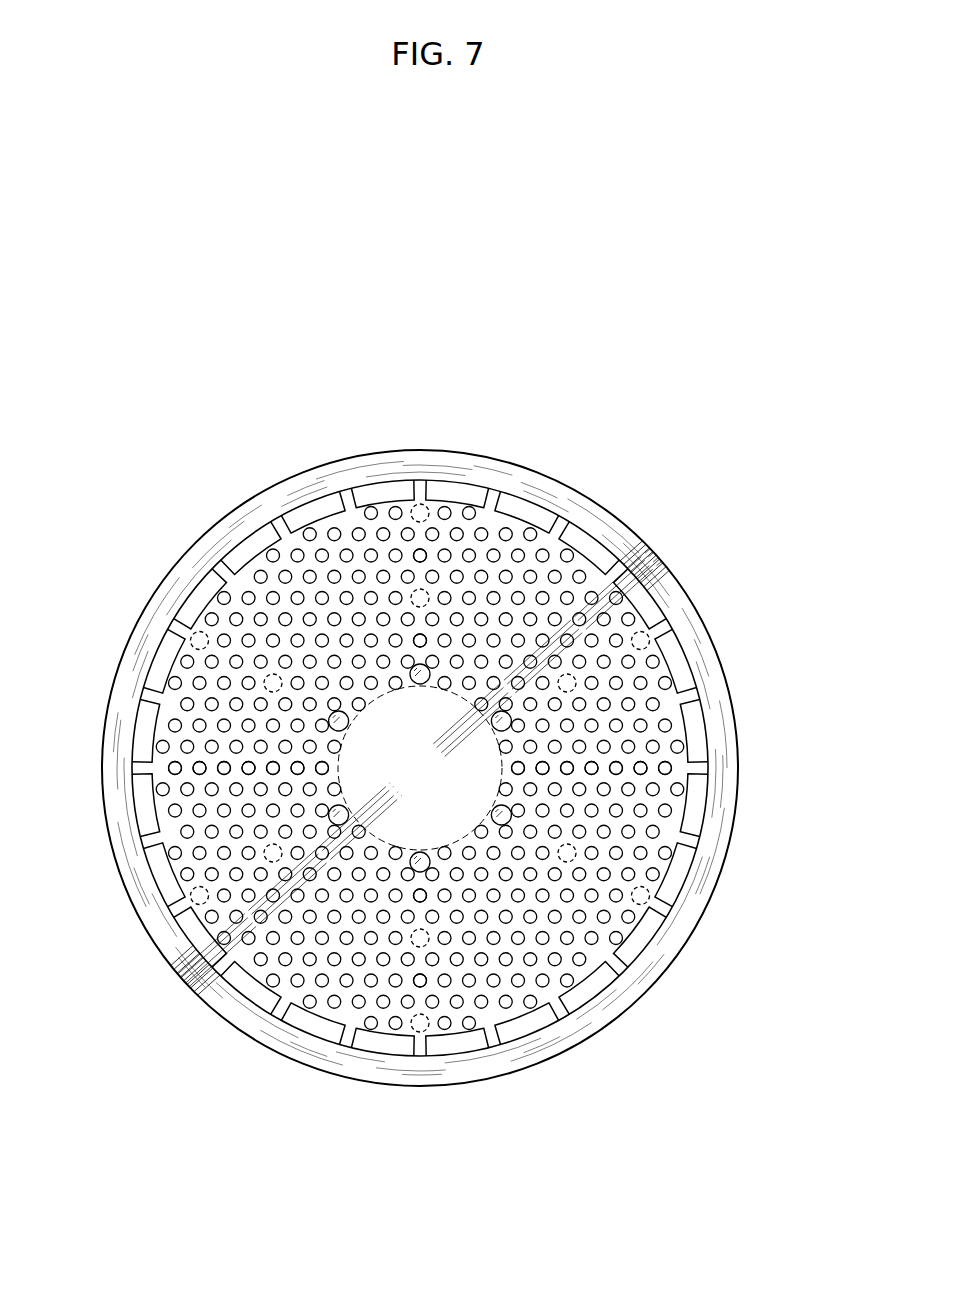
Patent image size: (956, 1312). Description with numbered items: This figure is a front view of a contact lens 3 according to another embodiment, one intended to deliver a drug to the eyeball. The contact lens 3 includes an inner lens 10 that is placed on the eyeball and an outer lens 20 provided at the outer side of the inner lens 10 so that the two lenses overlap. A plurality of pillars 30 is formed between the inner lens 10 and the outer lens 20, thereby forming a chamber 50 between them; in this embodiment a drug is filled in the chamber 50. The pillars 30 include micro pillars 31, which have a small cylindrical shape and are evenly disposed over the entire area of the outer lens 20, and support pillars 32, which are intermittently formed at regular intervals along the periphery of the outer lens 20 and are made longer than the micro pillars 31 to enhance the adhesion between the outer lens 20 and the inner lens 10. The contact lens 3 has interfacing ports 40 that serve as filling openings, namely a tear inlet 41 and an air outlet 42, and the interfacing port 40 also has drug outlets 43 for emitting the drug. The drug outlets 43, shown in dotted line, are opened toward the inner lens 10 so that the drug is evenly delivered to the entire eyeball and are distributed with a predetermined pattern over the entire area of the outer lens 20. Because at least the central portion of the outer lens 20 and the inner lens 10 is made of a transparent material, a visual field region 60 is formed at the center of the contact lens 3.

The contact lens 3 is at (384, 396).
The inner lens 10 is at (660, 985).
The outer lens 20 is at (672, 702).
The pillars 30 is at (367, 825).
The micro pillars 31 is at (217, 940).
The support pillars 32 is at (243, 990).
The interfacing port 40 is at (484, 822).
The tear inlet 41 is at (348, 1042).
The air outlet 42 is at (500, 806).
The drug outlet 43 is at (570, 862).
The chamber 50 is at (636, 736).
The visual field region 60 is at (430, 710).